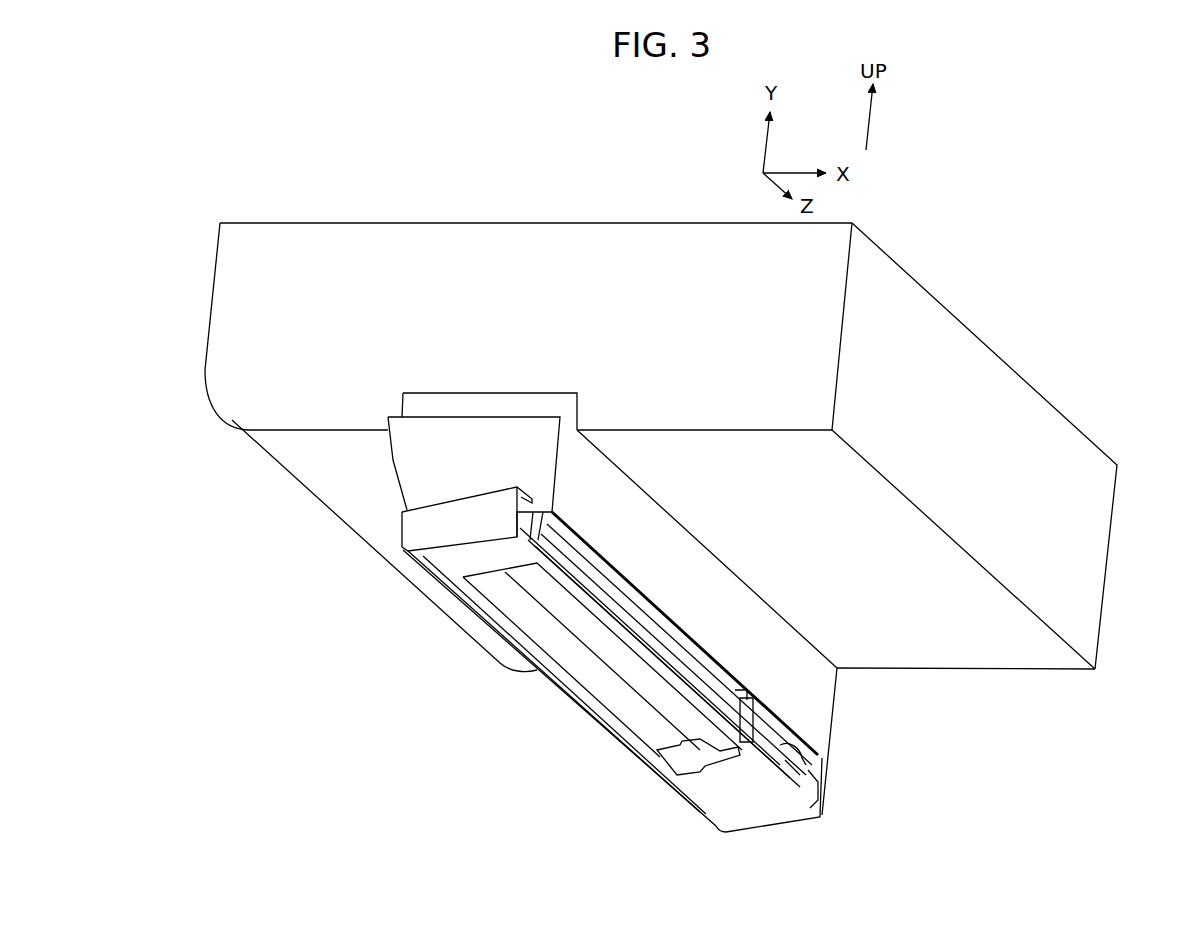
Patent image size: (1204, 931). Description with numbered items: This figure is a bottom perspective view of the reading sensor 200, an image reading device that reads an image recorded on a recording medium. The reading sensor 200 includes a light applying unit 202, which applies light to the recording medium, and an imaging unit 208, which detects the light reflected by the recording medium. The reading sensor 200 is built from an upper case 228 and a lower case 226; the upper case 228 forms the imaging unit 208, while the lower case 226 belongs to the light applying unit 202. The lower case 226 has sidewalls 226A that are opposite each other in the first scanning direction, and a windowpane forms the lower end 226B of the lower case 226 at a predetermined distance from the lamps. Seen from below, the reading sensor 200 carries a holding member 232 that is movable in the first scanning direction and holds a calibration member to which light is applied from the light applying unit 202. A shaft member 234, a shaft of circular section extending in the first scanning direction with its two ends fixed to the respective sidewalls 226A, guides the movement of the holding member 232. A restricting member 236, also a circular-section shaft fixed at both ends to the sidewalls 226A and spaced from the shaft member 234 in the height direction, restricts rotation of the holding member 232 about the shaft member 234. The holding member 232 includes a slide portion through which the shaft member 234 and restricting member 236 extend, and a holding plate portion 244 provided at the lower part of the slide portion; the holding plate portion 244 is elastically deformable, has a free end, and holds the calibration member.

The reading sensor 200 is at (938, 188).
The imaging unit 208 is at (1110, 390).
The upper case 228 is at (850, 269).
The lower case 226 is at (824, 710).
The sidewalls 226A is at (425, 468).
The lower end 226B is at (748, 808).
The light applying unit 202 is at (880, 790).
The holding member 232 is at (756, 712).
The shaft member 234 is at (826, 793).
The restricting member 236 is at (798, 770).
The holding plate portion 244 is at (692, 775).